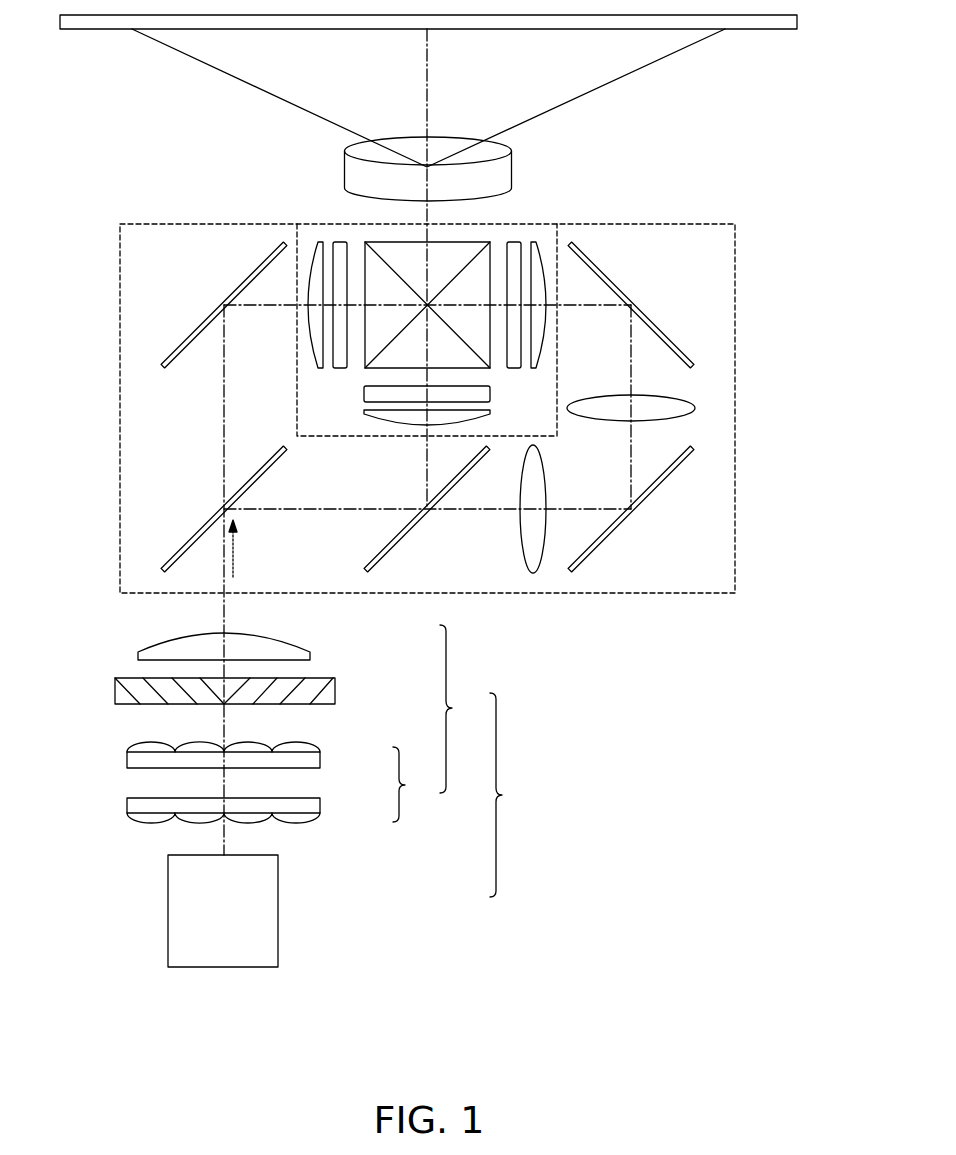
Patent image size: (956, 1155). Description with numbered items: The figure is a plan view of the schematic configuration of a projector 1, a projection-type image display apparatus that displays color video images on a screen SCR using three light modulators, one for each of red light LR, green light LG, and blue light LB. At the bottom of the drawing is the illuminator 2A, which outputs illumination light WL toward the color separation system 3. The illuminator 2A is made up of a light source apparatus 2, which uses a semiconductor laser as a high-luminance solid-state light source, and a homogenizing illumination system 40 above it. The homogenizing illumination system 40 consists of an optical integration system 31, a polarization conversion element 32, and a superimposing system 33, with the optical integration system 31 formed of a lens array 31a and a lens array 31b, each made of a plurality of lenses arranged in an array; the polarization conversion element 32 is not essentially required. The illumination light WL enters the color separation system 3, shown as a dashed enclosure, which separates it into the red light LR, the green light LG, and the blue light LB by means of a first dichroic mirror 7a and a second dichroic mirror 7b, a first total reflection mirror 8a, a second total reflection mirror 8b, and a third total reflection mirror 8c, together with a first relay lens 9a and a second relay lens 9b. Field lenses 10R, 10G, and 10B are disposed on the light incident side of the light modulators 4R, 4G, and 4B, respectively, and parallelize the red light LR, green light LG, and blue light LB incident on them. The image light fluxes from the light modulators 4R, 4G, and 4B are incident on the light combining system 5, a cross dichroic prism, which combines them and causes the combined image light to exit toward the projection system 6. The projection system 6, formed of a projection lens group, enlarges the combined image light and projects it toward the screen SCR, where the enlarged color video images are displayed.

The projector 1 is at (740, 205).
The light source apparatus 2 is at (278, 877).
The illuminator 2A is at (515, 795).
The color separation system 3 is at (120, 356).
The light modulator 4R is at (341, 242).
The light modulator 4G is at (364, 393).
The light modulator 4B is at (514, 242).
The light combining system 5 is at (448, 250).
The projection system 6 is at (410, 147).
The first dichroic mirror 7a is at (193, 540).
The second dichroic mirror 7b is at (405, 540).
The first total reflection mirror 8a is at (200, 320).
The second total reflection mirror 8b is at (655, 497).
The third total reflection mirror 8c is at (653, 322).
The first relay lens 9a is at (520, 530).
The second relay lens 9b is at (690, 406).
The field lens 10R is at (318, 242).
The field lens 10G is at (364, 418).
The field lens 10B is at (538, 242).
The optical integration system 31 is at (416, 784).
The lens array 31a is at (322, 806).
The lens array 31b is at (322, 760).
The polarization conversion element 32 is at (335, 692).
The superimposing system 33 is at (300, 645).
The homogenizing illumination system 40 is at (465, 709).
The screen SCR is at (765, 30).
The illumination light WL is at (236, 557).
The red light LR is at (224, 425).
The green light LG is at (427, 470).
The blue light LB is at (631, 462).